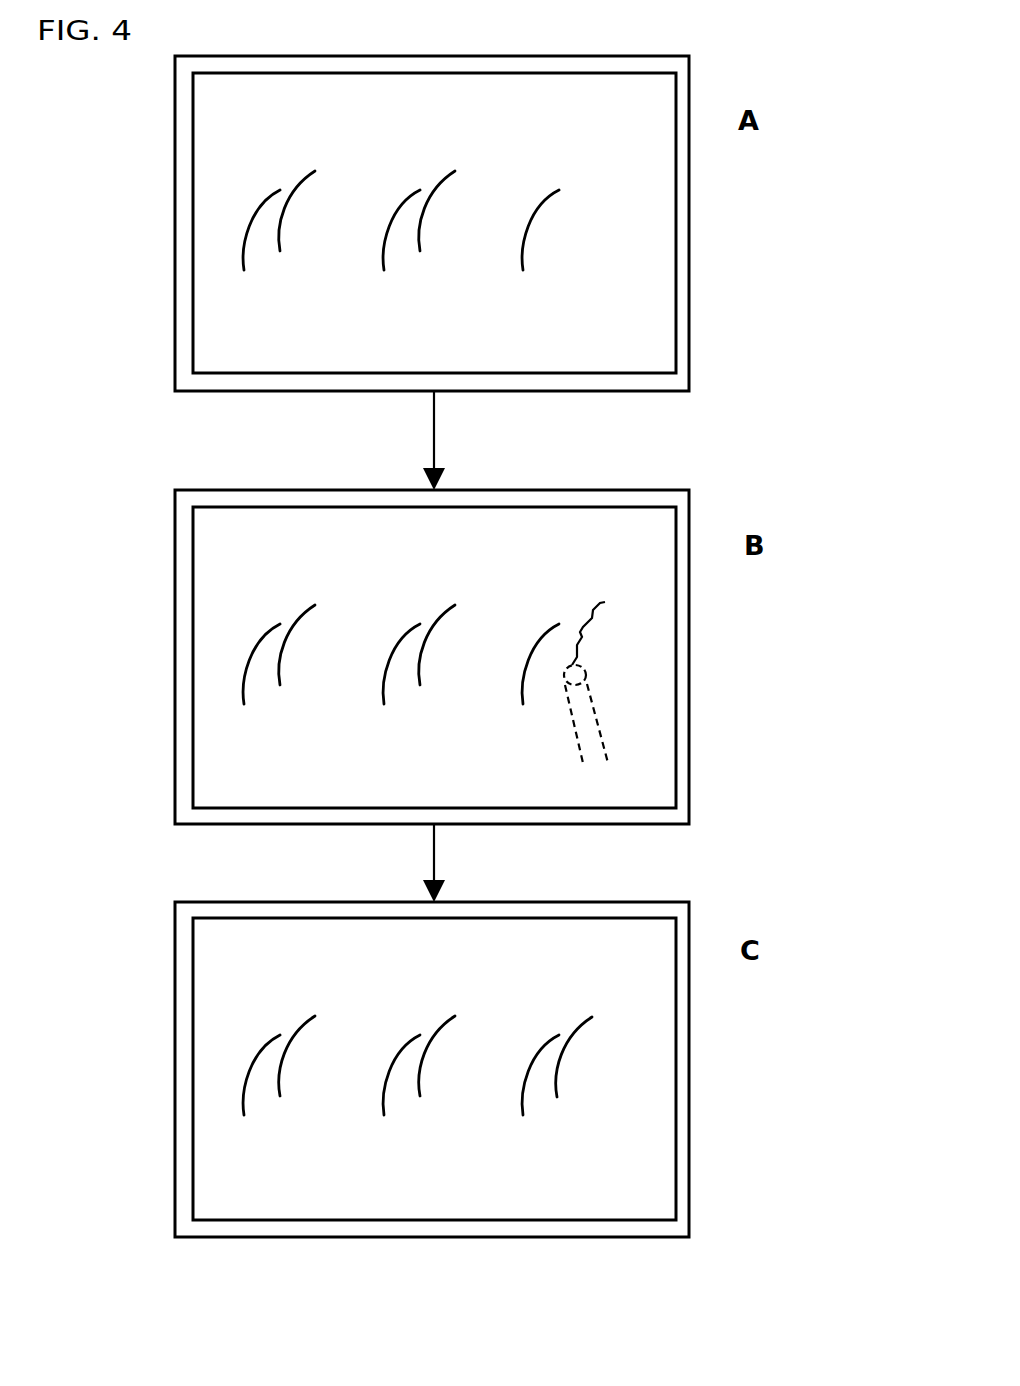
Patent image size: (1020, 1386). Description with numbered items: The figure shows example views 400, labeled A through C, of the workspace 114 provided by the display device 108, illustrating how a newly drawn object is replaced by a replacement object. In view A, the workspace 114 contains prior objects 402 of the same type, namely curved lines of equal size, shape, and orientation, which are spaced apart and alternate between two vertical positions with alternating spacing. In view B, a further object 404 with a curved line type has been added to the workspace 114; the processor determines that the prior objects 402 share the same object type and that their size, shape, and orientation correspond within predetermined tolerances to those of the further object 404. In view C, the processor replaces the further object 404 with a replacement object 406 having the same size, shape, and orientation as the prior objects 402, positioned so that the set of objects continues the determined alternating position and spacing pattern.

The example views 400 is at (745, 51).
The display device 108 is at (175, 119).
The workspace 114 is at (321, 80).
The prior objects 402 is at (276, 306).
The further object 404 is at (577, 652).
The replacement object 406 is at (558, 1055).